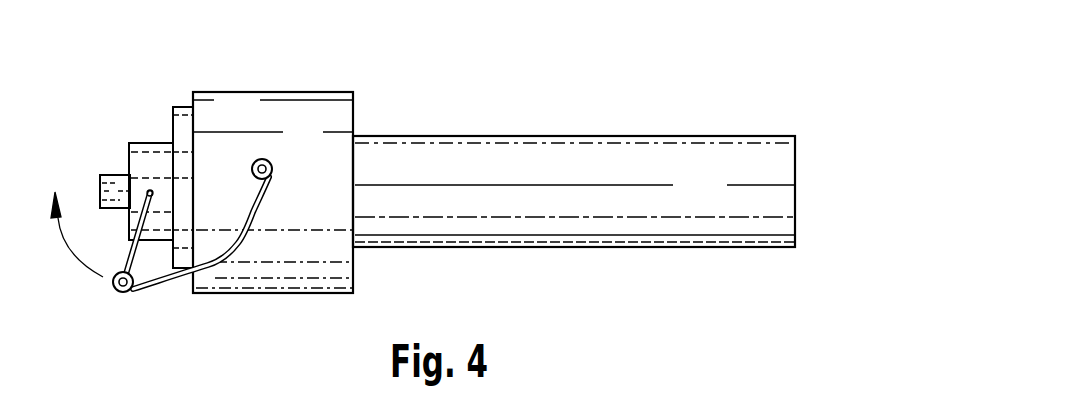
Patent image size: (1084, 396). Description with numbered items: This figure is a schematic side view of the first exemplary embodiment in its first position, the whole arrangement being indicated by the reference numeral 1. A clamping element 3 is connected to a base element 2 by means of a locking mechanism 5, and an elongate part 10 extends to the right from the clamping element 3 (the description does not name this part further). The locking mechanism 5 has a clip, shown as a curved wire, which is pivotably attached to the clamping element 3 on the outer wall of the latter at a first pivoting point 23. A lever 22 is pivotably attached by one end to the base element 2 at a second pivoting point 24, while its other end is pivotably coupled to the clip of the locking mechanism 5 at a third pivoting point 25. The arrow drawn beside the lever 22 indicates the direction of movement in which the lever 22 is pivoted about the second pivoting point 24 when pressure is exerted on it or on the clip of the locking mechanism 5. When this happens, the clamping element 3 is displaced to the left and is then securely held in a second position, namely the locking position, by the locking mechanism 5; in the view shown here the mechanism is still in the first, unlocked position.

The actuating device 1 is at (380, 82).
The base element 2 is at (149, 163).
The clamping element 3 is at (305, 119).
The locking mechanism 5 is at (167, 290).
The shaft 10 is at (545, 160).
The lever 22 is at (112, 257).
The first pivoting point 23 is at (256, 158).
The second pivoting point 24 is at (150, 190).
The third pivoting point 25 is at (130, 293).